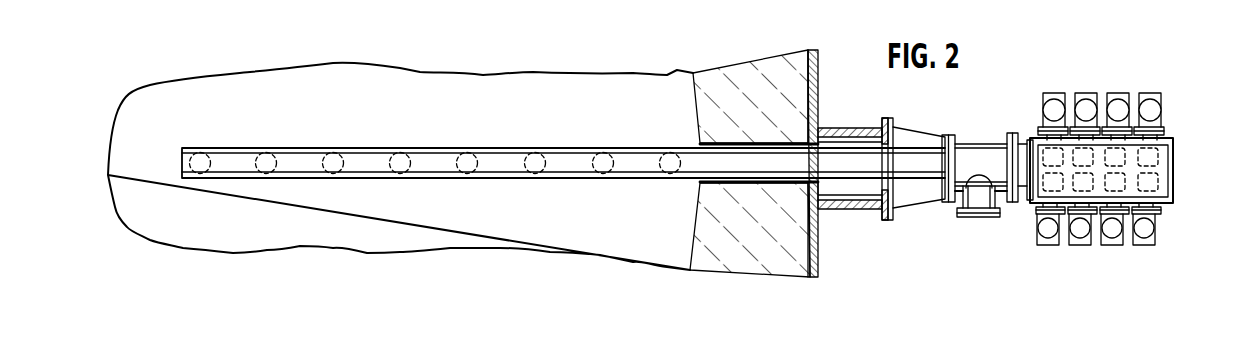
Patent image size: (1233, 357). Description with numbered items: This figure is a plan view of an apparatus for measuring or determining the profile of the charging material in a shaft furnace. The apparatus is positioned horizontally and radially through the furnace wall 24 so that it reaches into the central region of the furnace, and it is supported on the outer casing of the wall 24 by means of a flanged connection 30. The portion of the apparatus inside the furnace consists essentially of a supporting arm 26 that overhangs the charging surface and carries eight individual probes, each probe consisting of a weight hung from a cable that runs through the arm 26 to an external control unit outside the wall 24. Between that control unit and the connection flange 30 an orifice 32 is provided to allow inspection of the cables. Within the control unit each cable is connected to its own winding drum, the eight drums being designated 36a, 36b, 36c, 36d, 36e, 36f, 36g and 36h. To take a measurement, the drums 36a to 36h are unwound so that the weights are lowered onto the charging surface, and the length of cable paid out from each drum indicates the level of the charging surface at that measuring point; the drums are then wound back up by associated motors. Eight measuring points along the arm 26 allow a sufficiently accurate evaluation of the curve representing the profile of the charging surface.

The wall 24 is at (818, 114).
The supporting arm 26 is at (318, 148).
The flanged connection 30 is at (881, 219).
The orifice 32 is at (955, 214).
The winding drum 36a is at (1160, 102).
The winding drum 36b is at (1046, 231).
The winding drum 36c is at (1130, 101).
The winding drum 36d is at (1078, 231).
The winding drum 36e is at (1097, 103).
The winding drum 36f is at (1110, 231).
The winding drum 36g is at (1060, 100).
The winding drum 36h is at (1148, 244).